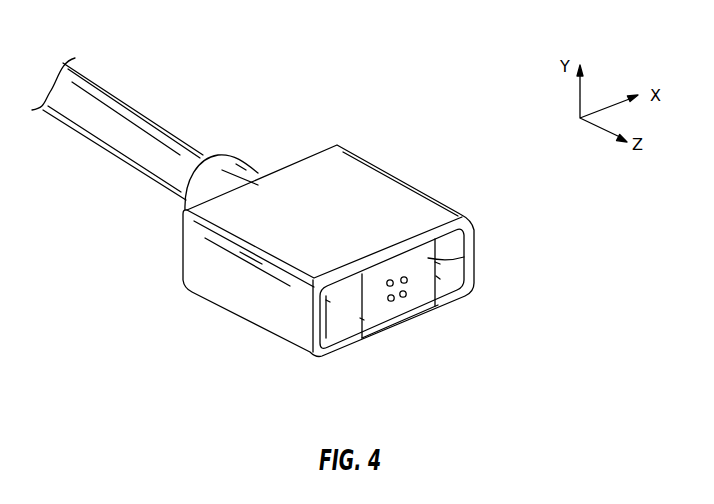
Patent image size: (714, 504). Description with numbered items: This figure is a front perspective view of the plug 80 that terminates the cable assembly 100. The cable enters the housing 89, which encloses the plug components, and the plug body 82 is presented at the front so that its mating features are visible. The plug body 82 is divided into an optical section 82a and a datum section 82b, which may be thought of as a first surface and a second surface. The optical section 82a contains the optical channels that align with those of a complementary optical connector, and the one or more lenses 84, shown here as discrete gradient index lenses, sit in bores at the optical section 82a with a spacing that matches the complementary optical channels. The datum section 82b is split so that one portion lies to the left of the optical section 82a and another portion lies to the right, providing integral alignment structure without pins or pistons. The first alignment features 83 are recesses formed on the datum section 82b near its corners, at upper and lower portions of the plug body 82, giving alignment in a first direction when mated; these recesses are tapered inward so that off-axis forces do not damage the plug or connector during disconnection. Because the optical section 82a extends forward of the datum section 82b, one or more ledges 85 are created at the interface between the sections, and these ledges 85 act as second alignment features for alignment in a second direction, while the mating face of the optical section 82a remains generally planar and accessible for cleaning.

The cable assembly 100 is at (344, 101).
The plug 80 is at (384, 190).
The first alignment features 83 is at (470, 297).
The housing 89 is at (267, 297).
The plug body 82 is at (437, 302).
The optical section 82a is at (473, 242).
The datum section 82b is at (470, 273).
The lenses 84 is at (404, 283).
The ledges 85 is at (440, 278).